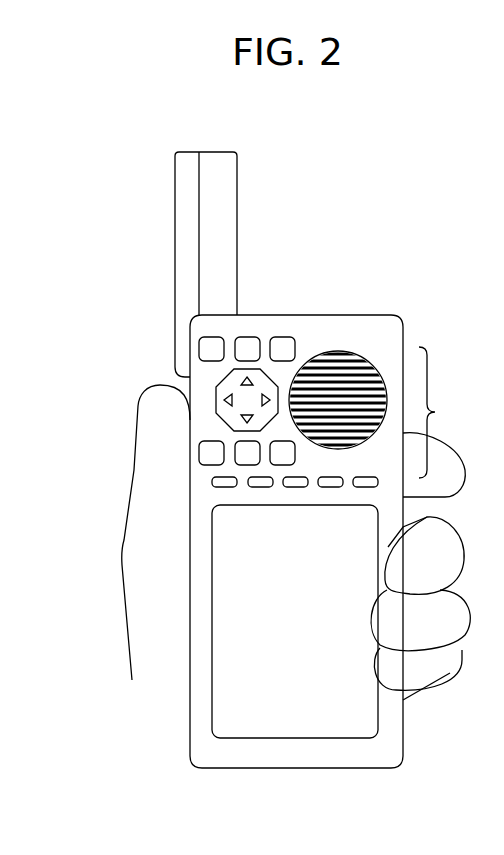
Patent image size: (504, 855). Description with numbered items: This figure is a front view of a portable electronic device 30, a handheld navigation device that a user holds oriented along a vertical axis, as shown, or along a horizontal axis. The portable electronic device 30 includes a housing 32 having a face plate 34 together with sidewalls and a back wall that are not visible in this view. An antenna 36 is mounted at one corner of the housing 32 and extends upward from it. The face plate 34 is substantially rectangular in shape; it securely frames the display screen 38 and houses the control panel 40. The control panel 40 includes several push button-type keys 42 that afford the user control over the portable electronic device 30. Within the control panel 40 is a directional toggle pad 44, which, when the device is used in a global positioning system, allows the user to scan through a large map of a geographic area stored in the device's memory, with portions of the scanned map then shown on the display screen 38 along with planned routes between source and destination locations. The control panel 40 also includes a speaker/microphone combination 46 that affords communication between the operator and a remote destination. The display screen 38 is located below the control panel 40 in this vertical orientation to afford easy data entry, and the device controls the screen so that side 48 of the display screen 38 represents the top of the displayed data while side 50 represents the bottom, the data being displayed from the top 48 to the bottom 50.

The portable electronic device 30 is at (293, 243).
The housing 32 is at (368, 316).
The face plate 34 is at (360, 761).
The antenna 36 is at (225, 192).
The display screen 38 is at (255, 672).
The control panel 40 is at (443, 412).
The push button-type keys 42 is at (207, 337).
The directional toggle pad 44 is at (241, 397).
The speaker/microphone combination 46 is at (337, 359).
The side of the display screen (top) 48 is at (310, 505).
The side of the display screen (bottom) 50 is at (280, 738).